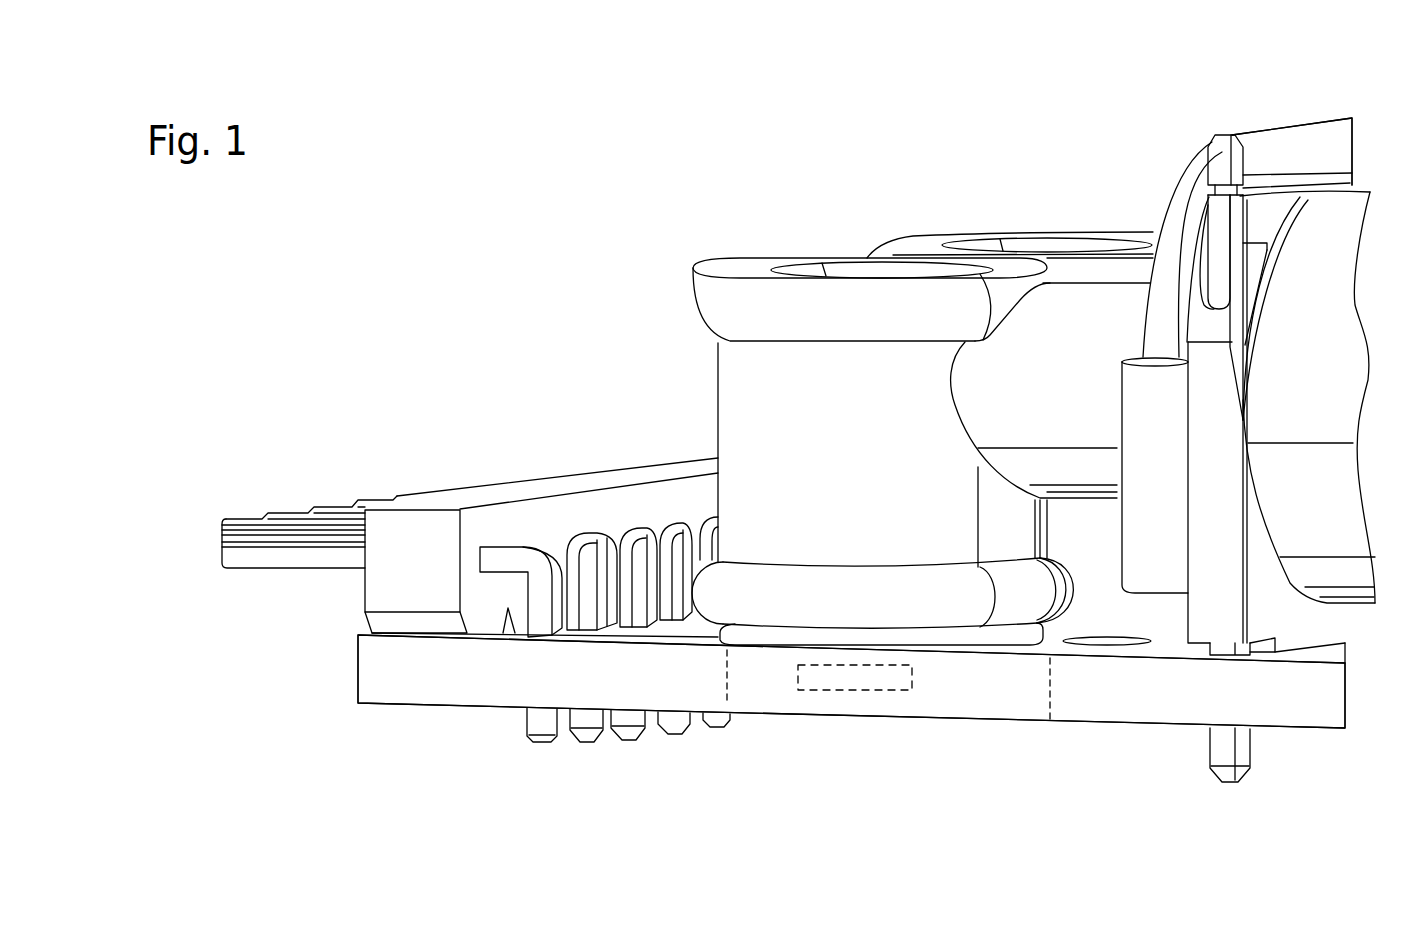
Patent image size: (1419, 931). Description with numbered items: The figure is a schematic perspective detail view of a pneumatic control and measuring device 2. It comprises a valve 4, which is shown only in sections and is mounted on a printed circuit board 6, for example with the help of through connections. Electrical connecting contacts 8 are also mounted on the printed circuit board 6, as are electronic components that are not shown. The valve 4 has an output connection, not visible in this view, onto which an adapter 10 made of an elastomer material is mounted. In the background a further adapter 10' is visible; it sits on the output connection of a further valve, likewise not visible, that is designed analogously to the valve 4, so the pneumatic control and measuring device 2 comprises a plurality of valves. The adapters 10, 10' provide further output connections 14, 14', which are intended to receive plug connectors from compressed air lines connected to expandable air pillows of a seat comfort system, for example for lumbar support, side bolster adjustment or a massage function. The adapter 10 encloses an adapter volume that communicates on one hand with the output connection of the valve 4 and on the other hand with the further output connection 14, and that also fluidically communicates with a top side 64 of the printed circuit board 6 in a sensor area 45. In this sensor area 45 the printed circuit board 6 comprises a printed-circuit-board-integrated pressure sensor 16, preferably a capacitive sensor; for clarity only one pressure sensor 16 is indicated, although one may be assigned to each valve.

The pneumatic control and measuring device 2 is at (652, 151).
The valve 4 is at (1300, 120).
The printed circuit board 6 is at (627, 676).
The electrical connecting contacts 8 is at (334, 483).
The adapter 10 is at (889, 451).
The further adapter 10' is at (1010, 215).
The further output connection 14 is at (882, 217).
The further output connection 14' is at (1047, 193).
The printed-circuit-board-integrated pressure sensor 16 is at (882, 675).
The sensor area 45 is at (1052, 672).
The top side 64 is at (650, 637).